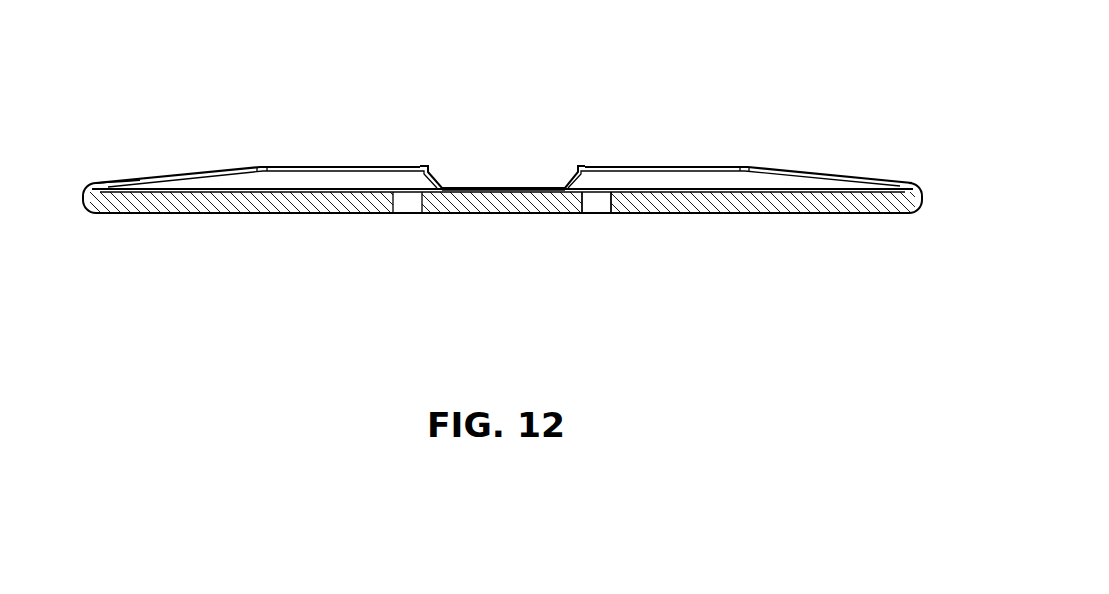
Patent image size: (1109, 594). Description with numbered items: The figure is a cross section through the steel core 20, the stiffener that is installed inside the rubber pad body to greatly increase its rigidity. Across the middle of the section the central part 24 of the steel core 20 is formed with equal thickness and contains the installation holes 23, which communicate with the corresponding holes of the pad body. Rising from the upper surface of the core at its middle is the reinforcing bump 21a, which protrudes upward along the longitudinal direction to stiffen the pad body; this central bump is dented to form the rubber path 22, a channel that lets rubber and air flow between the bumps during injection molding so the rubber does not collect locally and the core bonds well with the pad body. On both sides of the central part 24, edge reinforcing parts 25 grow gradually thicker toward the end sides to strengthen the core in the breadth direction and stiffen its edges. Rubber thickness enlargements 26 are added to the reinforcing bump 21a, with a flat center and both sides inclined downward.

The steel core 20 is at (361, 117).
The reinforcing bump 21a is at (680, 180).
The rubber path 22 is at (478, 178).
The installation holes 23 is at (598, 204).
The central part 24 is at (532, 187).
The edge reinforcing parts 25 is at (138, 186).
The rubber thickness enlargements 26 is at (187, 173).